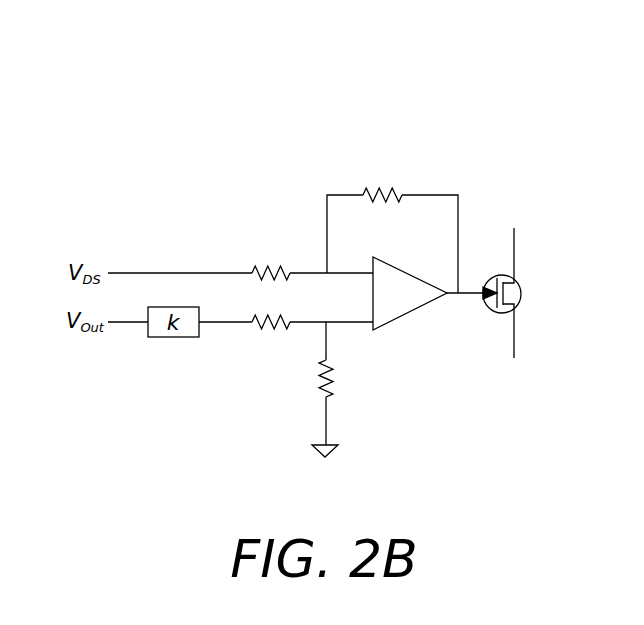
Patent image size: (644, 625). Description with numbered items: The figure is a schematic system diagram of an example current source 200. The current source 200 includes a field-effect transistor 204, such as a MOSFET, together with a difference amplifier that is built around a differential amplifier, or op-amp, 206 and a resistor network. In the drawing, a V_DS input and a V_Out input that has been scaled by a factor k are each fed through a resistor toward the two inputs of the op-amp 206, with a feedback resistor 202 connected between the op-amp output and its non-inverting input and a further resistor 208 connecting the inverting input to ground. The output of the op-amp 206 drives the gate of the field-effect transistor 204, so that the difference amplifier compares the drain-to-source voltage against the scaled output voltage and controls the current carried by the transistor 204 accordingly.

The current source 200 is at (448, 103).
The feedback resistor 202 is at (392, 222).
The field-effect transistor 204 is at (410, 293).
The differential amplifier 206 is at (349, 309).
The resistor to ground 208 is at (348, 389).